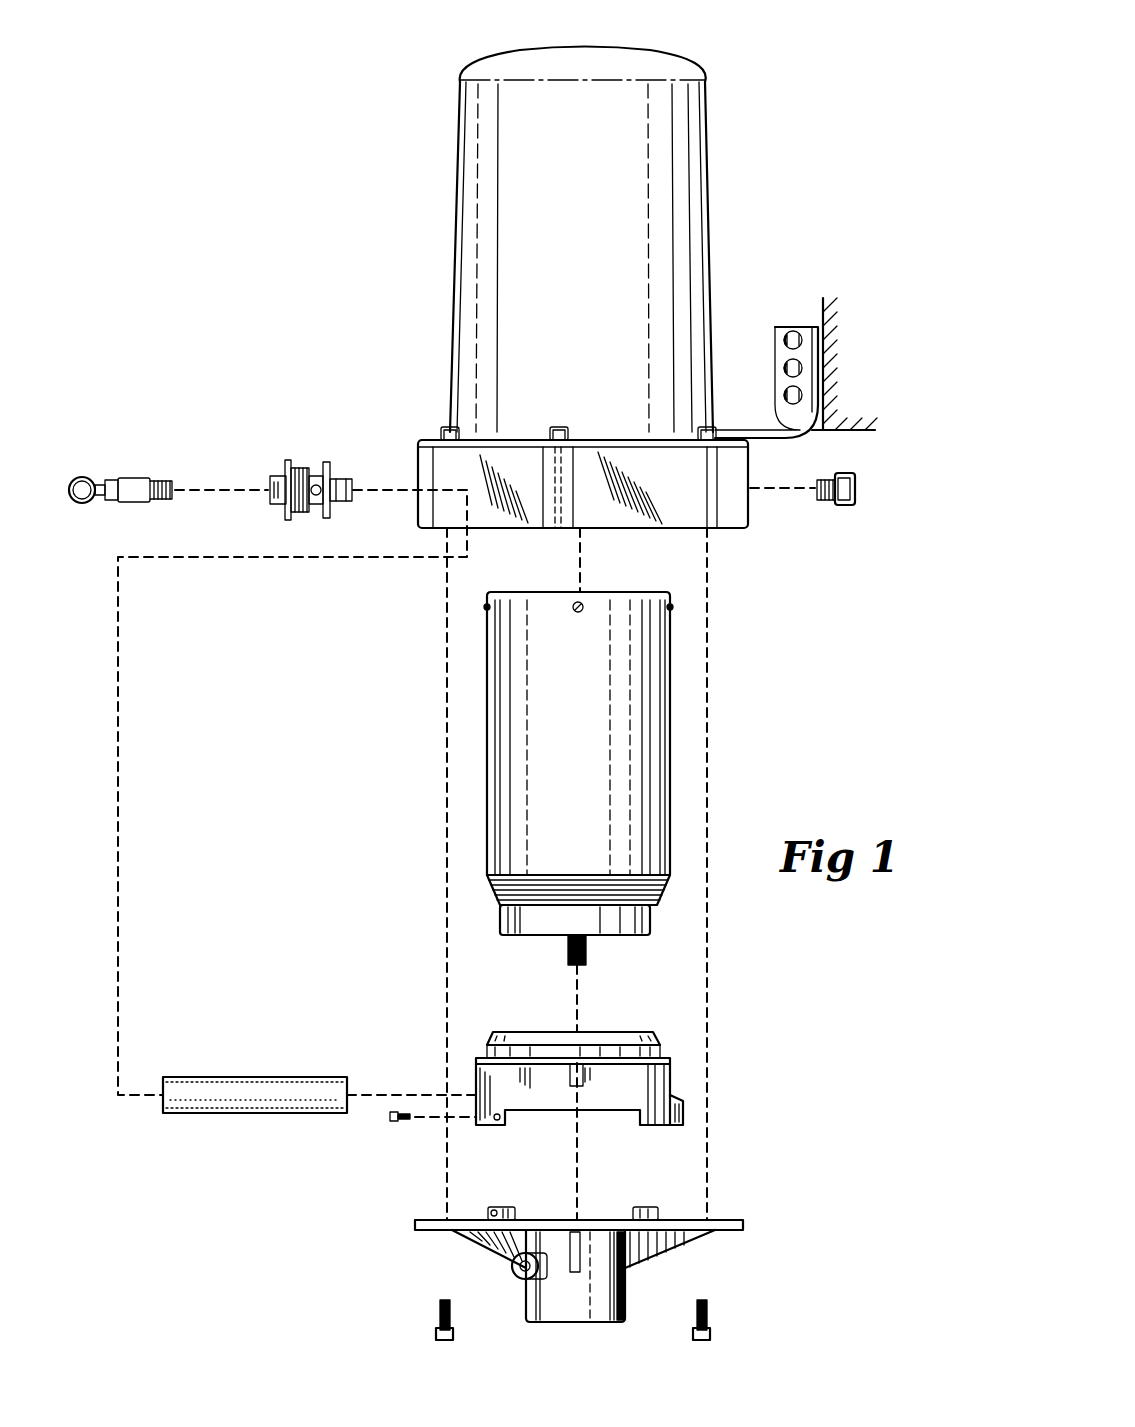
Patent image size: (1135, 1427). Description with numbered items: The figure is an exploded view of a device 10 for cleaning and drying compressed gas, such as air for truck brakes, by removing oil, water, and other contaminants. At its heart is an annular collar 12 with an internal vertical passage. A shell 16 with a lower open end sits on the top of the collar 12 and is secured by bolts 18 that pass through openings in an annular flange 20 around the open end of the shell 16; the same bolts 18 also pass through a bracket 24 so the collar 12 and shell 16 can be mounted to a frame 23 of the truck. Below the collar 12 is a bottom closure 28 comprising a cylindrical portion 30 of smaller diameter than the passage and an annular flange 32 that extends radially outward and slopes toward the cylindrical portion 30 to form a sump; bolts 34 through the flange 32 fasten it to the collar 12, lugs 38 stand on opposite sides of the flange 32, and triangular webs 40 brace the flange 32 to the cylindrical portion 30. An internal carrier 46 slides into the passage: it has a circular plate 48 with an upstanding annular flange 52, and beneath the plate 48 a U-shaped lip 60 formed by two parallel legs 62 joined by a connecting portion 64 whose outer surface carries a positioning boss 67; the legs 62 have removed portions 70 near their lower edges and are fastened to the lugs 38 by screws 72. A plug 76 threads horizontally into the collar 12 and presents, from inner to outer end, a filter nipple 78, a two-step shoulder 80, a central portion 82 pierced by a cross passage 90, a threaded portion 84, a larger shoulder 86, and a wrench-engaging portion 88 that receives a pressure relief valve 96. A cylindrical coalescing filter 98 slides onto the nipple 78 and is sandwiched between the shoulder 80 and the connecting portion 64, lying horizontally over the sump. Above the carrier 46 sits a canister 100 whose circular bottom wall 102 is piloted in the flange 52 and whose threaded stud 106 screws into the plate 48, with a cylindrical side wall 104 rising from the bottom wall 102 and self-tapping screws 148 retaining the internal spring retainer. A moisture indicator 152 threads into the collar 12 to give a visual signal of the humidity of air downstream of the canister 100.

The device for cleaning and drying compressed gas 10 is at (337, 152).
The annular collar 12 is at (755, 505).
The shell 16 is at (680, 76).
The bolts 18 is at (443, 432).
The annular flange 20 is at (608, 446).
The frame 23 is at (823, 308).
The bracket 24 is at (778, 327).
The bottom closure 28 is at (527, 1295).
The cylindrical portion 30 is at (627, 1312).
The annular flange 32 is at (415, 1225).
The bolts 34 is at (436, 1336).
The lugs 38 is at (520, 1198).
The webs 40 is at (512, 1262).
The internal carrier 46 is at (574, 1086).
The circular plate 48 is at (662, 1052).
The annular flange 52 is at (653, 1045).
The U-shaped lip 60 is at (680, 1067).
The legs 62 is at (490, 1125).
The connecting portion 64 is at (665, 1078).
The positioning boss 67 is at (684, 1114).
The removed portions 70 is at (552, 1112).
The screws 72 is at (394, 1122).
The plug 76 is at (295, 473).
The filter nipple 78 is at (348, 479).
The two-step radially extending shoulder 80 is at (328, 462).
The central portion 82 is at (302, 528).
The threaded portion 84 is at (304, 468).
The radially extending shoulder 86 is at (288, 460).
The portion 88 is at (270, 500).
The cross passage 90 is at (318, 476).
The pressure relief valve 96 is at (134, 478).
The coalescing filter 98 is at (234, 1082).
The canister 100 is at (552, 788).
The circular bottom wall 102 is at (515, 937).
The cylindrical side wall 104 is at (670, 742).
The threaded stud 106 is at (590, 962).
The self-tapping screws 148 is at (484, 607).
The moisture indicator 152 is at (858, 486).